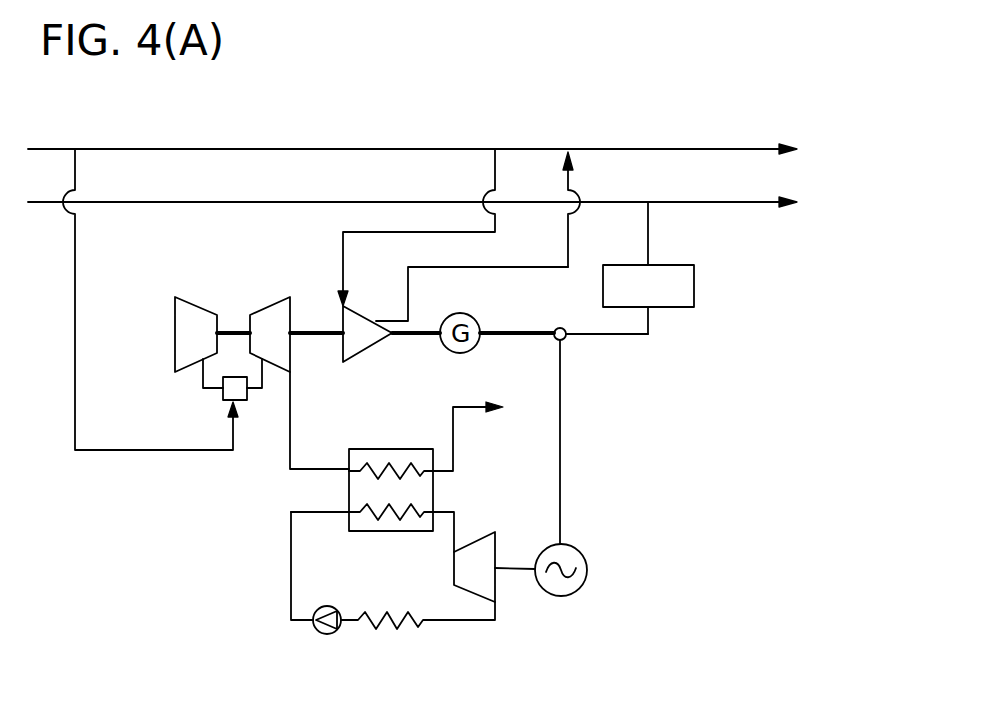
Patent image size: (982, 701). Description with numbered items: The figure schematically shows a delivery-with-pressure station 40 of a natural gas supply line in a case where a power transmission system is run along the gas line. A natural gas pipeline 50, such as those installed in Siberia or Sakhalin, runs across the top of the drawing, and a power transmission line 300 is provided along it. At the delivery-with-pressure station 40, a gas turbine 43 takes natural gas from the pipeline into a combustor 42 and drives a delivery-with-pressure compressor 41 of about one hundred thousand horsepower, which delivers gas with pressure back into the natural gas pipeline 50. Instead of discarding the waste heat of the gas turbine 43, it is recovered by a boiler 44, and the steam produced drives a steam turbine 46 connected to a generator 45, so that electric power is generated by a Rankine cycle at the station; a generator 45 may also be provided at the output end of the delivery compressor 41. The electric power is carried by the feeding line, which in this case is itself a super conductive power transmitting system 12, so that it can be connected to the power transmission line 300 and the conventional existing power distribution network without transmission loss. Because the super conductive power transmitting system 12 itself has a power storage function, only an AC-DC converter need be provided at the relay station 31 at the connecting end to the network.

The delivery-with-pressure station 40 is at (198, 553).
The natural gas pipeline 50 is at (387, 148).
The power transmission line 300 is at (283, 205).
The gas turbine 43 is at (185, 323).
The combustor 42 is at (230, 399).
The delivery-with-pressure compressor 41 is at (360, 310).
The super conductive power transmitting system 12 is at (607, 337).
The relay station 31 is at (685, 283).
The boiler 44 is at (392, 447).
The steam turbine 46 is at (497, 588).
The generator 45 is at (570, 543).